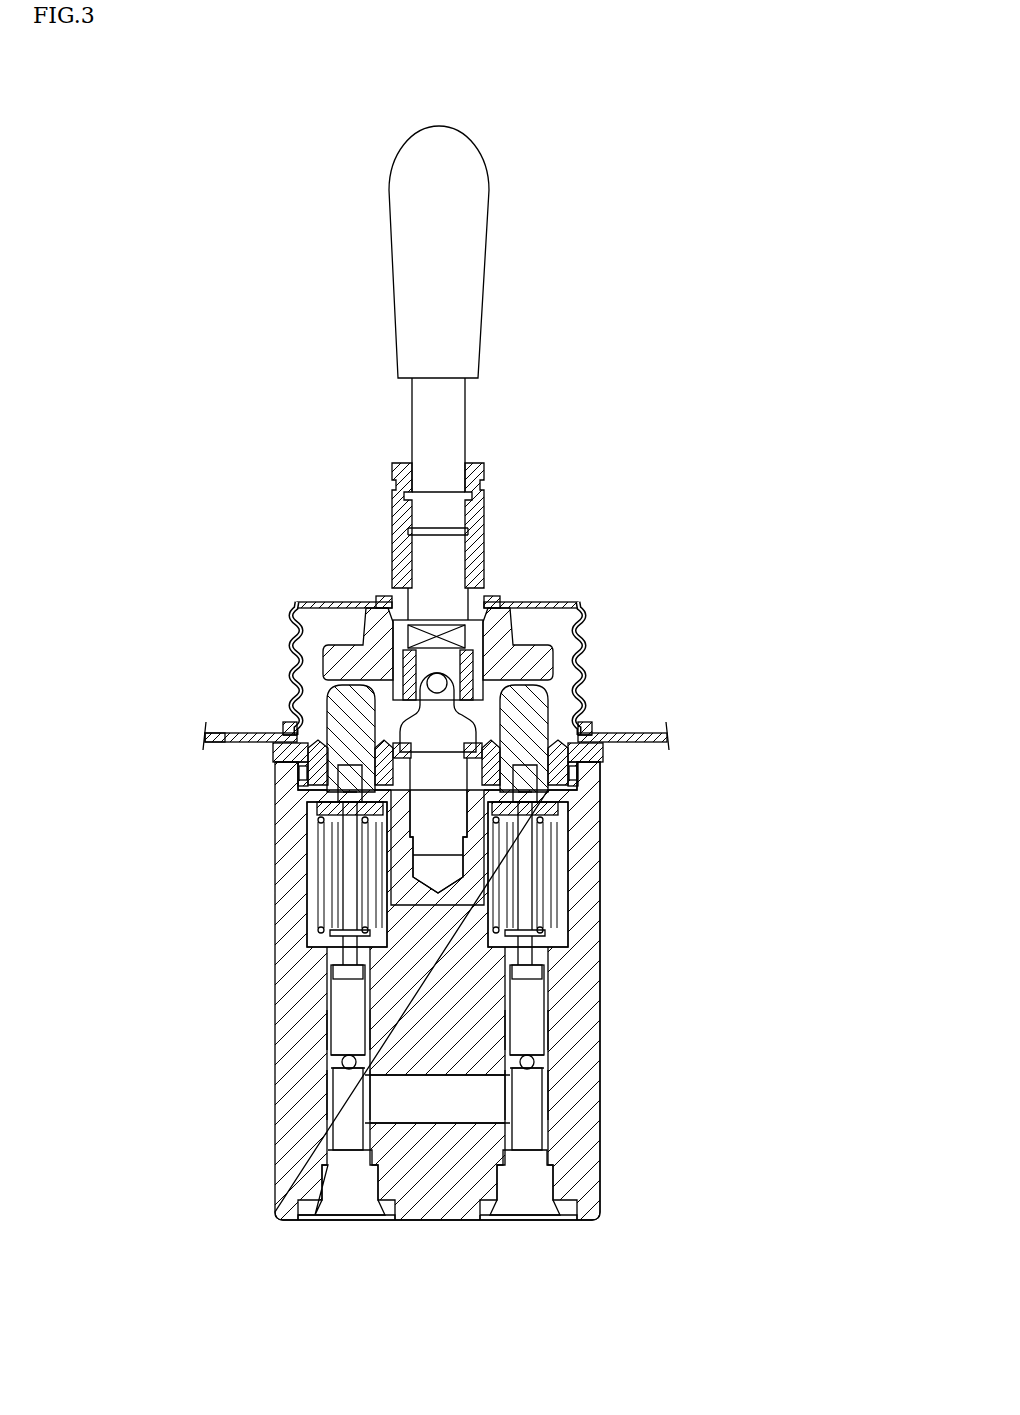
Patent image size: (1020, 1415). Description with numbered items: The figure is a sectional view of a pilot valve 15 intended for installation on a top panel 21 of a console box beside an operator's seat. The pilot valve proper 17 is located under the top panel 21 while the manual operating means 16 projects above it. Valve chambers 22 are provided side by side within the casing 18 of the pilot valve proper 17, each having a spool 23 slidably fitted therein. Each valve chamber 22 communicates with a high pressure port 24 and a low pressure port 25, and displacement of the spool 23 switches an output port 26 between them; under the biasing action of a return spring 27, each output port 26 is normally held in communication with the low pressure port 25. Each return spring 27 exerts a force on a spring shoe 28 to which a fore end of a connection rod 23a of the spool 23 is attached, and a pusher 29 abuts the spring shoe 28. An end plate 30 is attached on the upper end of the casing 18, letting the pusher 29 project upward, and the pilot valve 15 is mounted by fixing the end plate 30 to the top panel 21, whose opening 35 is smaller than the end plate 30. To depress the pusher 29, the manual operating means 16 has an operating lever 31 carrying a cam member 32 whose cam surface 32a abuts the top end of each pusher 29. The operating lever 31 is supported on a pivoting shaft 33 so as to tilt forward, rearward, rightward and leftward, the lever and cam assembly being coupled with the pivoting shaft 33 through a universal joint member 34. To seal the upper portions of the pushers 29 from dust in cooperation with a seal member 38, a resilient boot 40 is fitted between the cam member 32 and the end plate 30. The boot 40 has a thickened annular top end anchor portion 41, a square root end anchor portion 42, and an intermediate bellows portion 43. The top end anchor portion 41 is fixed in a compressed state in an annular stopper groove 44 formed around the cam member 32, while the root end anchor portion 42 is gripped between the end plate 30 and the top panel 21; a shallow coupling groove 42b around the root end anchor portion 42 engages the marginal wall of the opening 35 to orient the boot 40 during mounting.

The pilot valve 15 is at (592, 352).
The manual operating means 16 is at (378, 456).
The pilot valve proper 17 is at (612, 1035).
The casing 18 is at (286, 1003).
The top panel 21 is at (622, 745).
The valve chamber 22 is at (336, 1140).
The spool 23 is at (340, 1102).
The connection rod 23a is at (340, 895).
The high pressure port 24 is at (460, 1110).
The low pressure port 25 is at (425, 925).
The output port 26 is at (340, 1187).
The return spring 27 is at (318, 830).
The spring shoe 28 is at (330, 812).
The pusher 29 is at (288, 680).
The end plate 30 is at (602, 768).
The operating lever 31 is at (405, 237).
The cam member 32 is at (540, 650).
The cam surface 32a is at (283, 650).
The pivoting shaft 33 is at (418, 727).
The universal joint member 34 is at (345, 625).
The opening 35 is at (600, 728).
The seal member 38 is at (275, 748).
The boot 40 is at (288, 594).
The top end anchor portion 41 is at (375, 585).
The root end anchor portion 42 is at (598, 735).
The coupling groove 42b is at (207, 735).
The bellows portion 43 is at (584, 634).
The stopper groove 44 is at (490, 598).